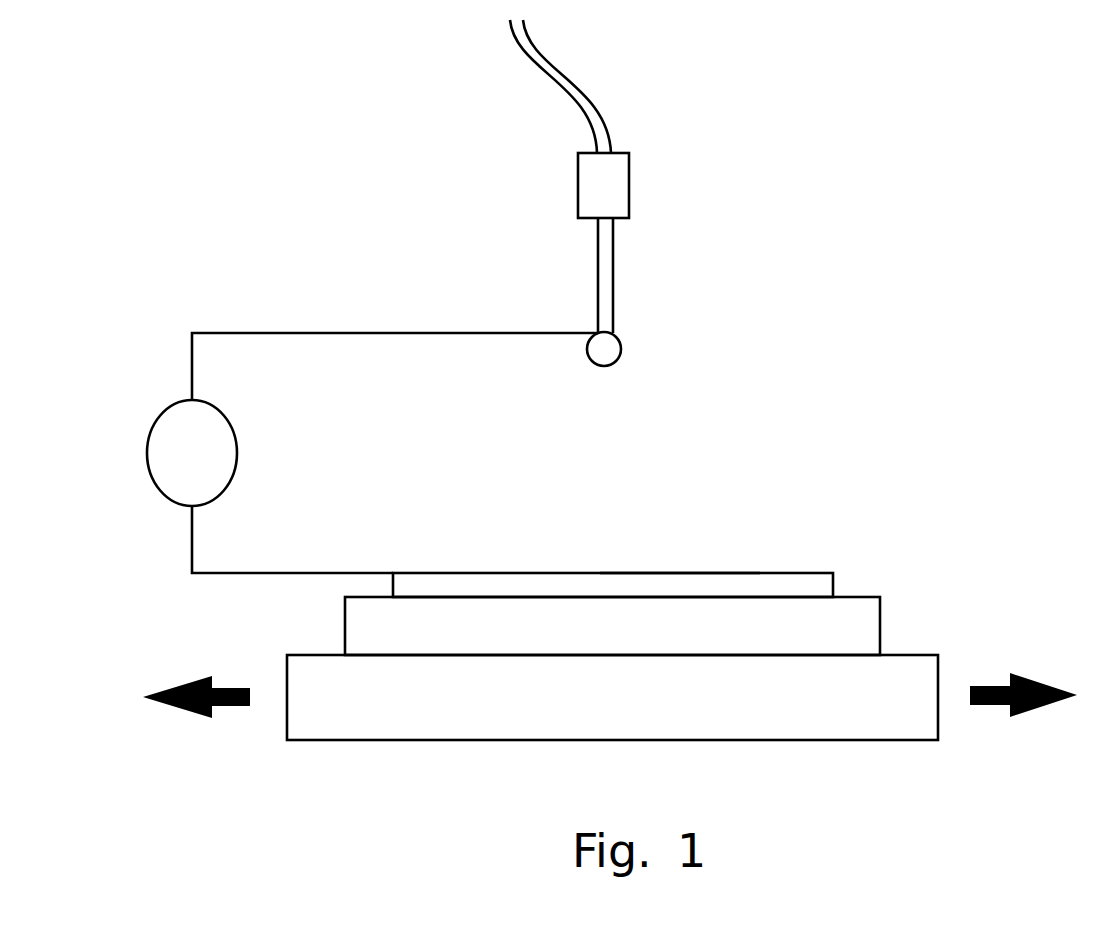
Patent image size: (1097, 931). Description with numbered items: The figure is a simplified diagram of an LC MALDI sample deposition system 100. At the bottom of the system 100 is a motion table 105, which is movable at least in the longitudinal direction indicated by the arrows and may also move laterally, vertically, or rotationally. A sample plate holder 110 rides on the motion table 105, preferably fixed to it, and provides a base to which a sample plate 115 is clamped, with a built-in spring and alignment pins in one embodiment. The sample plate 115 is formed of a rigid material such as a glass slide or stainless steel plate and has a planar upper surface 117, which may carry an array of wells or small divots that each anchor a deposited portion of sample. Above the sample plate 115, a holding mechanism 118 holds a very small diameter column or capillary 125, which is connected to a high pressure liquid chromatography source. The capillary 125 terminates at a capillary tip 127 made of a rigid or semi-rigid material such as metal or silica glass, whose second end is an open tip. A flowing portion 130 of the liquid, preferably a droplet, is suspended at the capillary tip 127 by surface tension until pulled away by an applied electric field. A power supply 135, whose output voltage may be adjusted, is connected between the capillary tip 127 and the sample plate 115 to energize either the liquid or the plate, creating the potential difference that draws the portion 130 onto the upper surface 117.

The LC MALDI sample deposition system 100 is at (1005, 263).
The motion table 105 is at (387, 740).
The sample plate holder 110 is at (345, 627).
The sample plate 115 is at (835, 579).
The upper surface 117 is at (676, 560).
The holding mechanism 118 is at (630, 170).
The capillary 125 is at (562, 74).
The capillary tip 127 is at (613, 265).
The flowing portion of the liquid 130 is at (622, 347).
The power supply 135 is at (147, 453).